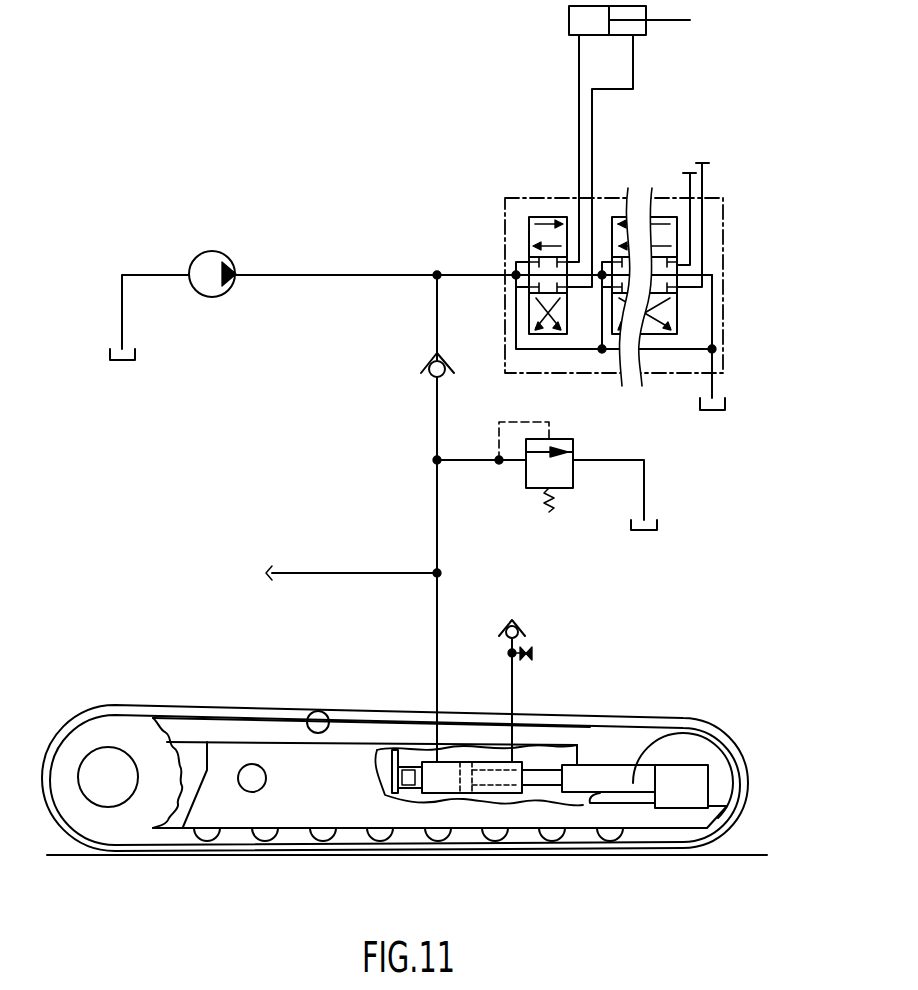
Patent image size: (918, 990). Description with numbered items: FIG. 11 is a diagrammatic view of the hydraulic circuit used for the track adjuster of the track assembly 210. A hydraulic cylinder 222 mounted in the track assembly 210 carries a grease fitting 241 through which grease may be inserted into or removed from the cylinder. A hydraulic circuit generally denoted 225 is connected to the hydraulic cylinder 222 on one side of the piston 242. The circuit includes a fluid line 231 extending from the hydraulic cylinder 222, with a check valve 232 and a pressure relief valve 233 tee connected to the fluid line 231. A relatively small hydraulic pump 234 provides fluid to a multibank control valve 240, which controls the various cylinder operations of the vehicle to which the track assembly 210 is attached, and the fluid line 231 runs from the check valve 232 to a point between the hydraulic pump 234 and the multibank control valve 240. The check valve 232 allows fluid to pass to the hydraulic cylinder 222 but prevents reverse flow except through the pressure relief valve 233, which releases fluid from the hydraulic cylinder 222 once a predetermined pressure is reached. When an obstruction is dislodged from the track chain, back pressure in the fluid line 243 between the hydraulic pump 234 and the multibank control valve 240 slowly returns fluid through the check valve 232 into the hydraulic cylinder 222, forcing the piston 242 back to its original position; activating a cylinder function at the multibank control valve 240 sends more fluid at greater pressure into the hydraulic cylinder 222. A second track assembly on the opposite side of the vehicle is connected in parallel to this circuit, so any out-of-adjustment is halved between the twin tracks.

The track assembly 210 is at (160, 660).
The hydraulic cylinder 222 is at (433, 797).
The hydraulic circuit 225 is at (216, 487).
The fluid line 231 is at (435, 620).
The check valve 232 is at (430, 365).
The pressure relief valve 233 is at (565, 438).
The hydraulic pump 234 is at (205, 250).
The multibank control valve 240 is at (530, 196).
The grease fitting 241 is at (521, 628).
The piston 242 is at (467, 797).
The fluid line 243 is at (473, 273).